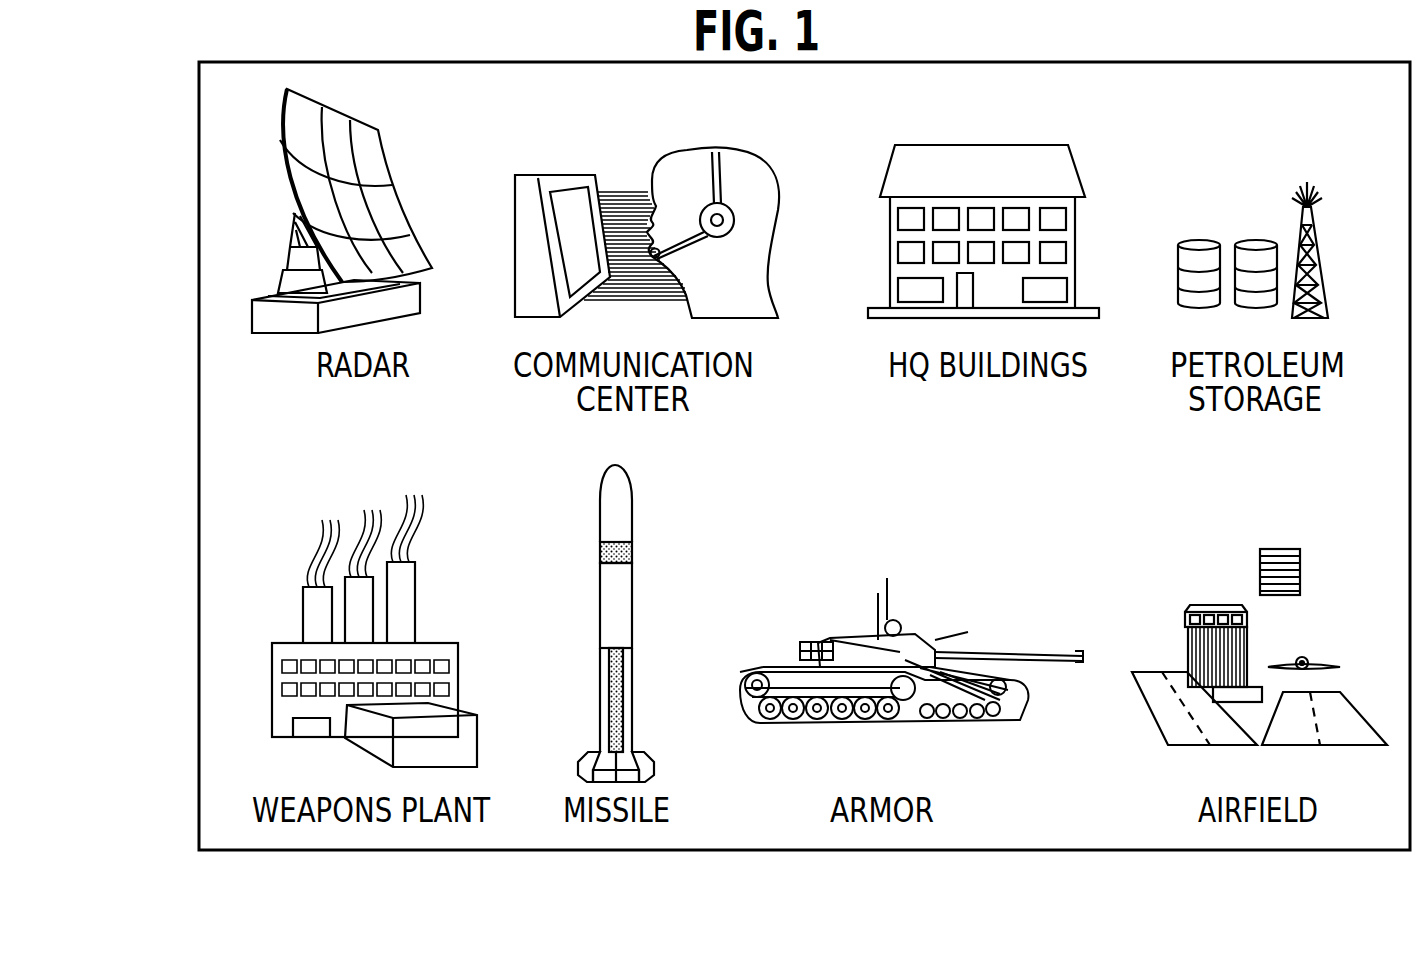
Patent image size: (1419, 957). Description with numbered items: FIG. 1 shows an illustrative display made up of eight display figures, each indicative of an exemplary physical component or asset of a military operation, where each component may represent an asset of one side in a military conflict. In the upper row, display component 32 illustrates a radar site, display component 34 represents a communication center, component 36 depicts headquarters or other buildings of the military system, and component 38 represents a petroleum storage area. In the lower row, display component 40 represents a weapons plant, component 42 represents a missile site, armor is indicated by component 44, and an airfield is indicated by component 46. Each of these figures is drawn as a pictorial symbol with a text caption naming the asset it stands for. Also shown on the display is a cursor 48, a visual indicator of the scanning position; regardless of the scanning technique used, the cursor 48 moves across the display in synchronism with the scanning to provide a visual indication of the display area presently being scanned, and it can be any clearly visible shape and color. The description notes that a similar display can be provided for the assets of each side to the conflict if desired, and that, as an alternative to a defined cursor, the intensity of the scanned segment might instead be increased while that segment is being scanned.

The display component (radar site) 32 is at (380, 172).
The display component (communication center) 34 is at (617, 190).
The component (headquarters or other buildings) 36 is at (978, 143).
The component (petroleum storage area) 38 is at (1240, 203).
The display component (weapons plant) 40 is at (302, 587).
The component (missile site) 42 is at (632, 578).
The component (armor) 44 is at (902, 633).
The component (airfield) 46 is at (1165, 582).
The cursor 48 is at (1282, 549).